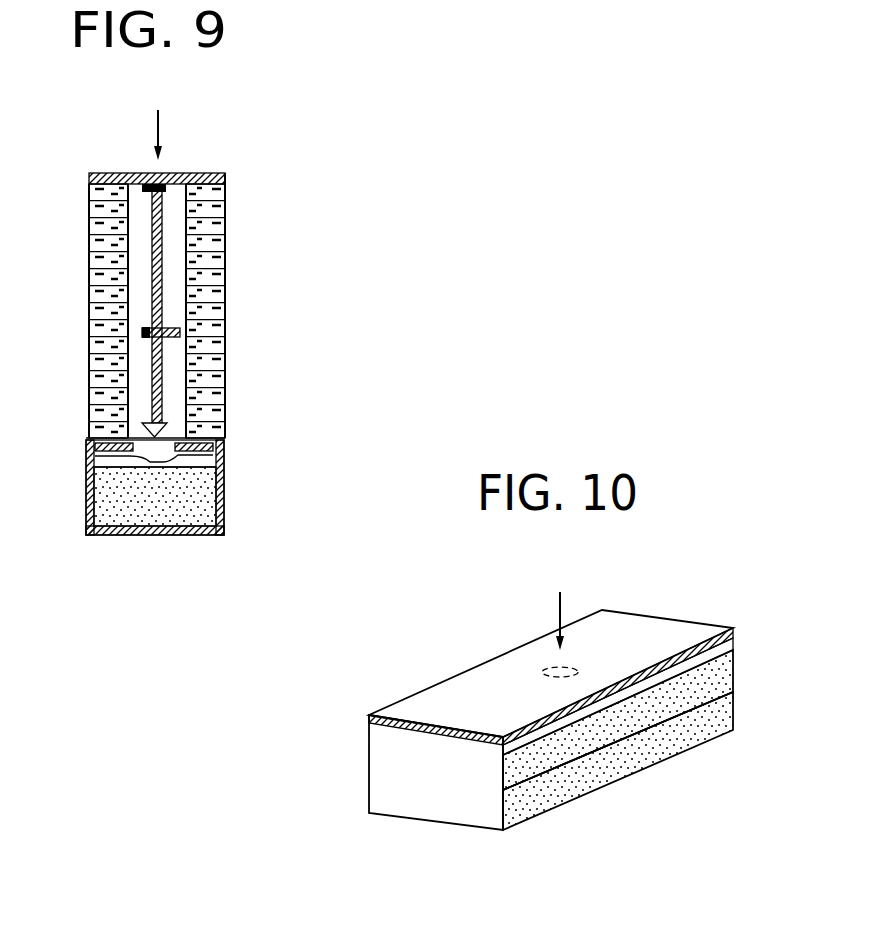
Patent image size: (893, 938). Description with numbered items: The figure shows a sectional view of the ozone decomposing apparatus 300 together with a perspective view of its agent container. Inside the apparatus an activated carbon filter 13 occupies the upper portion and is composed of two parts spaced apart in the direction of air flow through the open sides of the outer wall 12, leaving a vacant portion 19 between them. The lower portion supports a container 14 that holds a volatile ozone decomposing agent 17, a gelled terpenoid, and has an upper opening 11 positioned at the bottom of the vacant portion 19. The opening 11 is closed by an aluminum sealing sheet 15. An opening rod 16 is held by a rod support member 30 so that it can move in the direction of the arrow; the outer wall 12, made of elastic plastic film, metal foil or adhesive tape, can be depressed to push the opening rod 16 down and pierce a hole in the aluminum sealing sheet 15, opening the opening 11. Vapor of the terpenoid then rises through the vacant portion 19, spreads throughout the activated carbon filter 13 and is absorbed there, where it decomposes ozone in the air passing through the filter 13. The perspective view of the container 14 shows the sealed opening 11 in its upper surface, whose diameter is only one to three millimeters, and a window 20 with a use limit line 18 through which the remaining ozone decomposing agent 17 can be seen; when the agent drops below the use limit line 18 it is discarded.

In FIG. 9, the ozone decomposing apparatus 300 is at (384, 159).
In FIG. 9, the outer wall 12 is at (221, 174).
In FIG. 9, the activated carbon filter 13 is at (220, 217).
In FIG. 9, the vacant portion 19 is at (138, 313).
In FIG. 9, the opening rod 16 is at (163, 261).
In FIG. 9, the rod support member 30 is at (166, 333).
In FIG. 9, the aluminum sealing sheet 15 is at (221, 438).
In FIG. 10, the aluminum sealing sheet 15 is at (432, 687).
In FIG. 9, the container 14 is at (218, 454).
In FIG. 10, the container 14 is at (708, 618).
In FIG. 9, the opening 11 is at (95, 458).
In FIG. 10, the opening 11 is at (545, 665).
In FIG. 9, the ozone decomposing agent 17 is at (197, 498).
In FIG. 10, the ozone decomposing agent 17 is at (718, 675).
In FIG. 10, the use limit line 18 is at (703, 703).
In FIG. 10, the window 20 is at (645, 748).